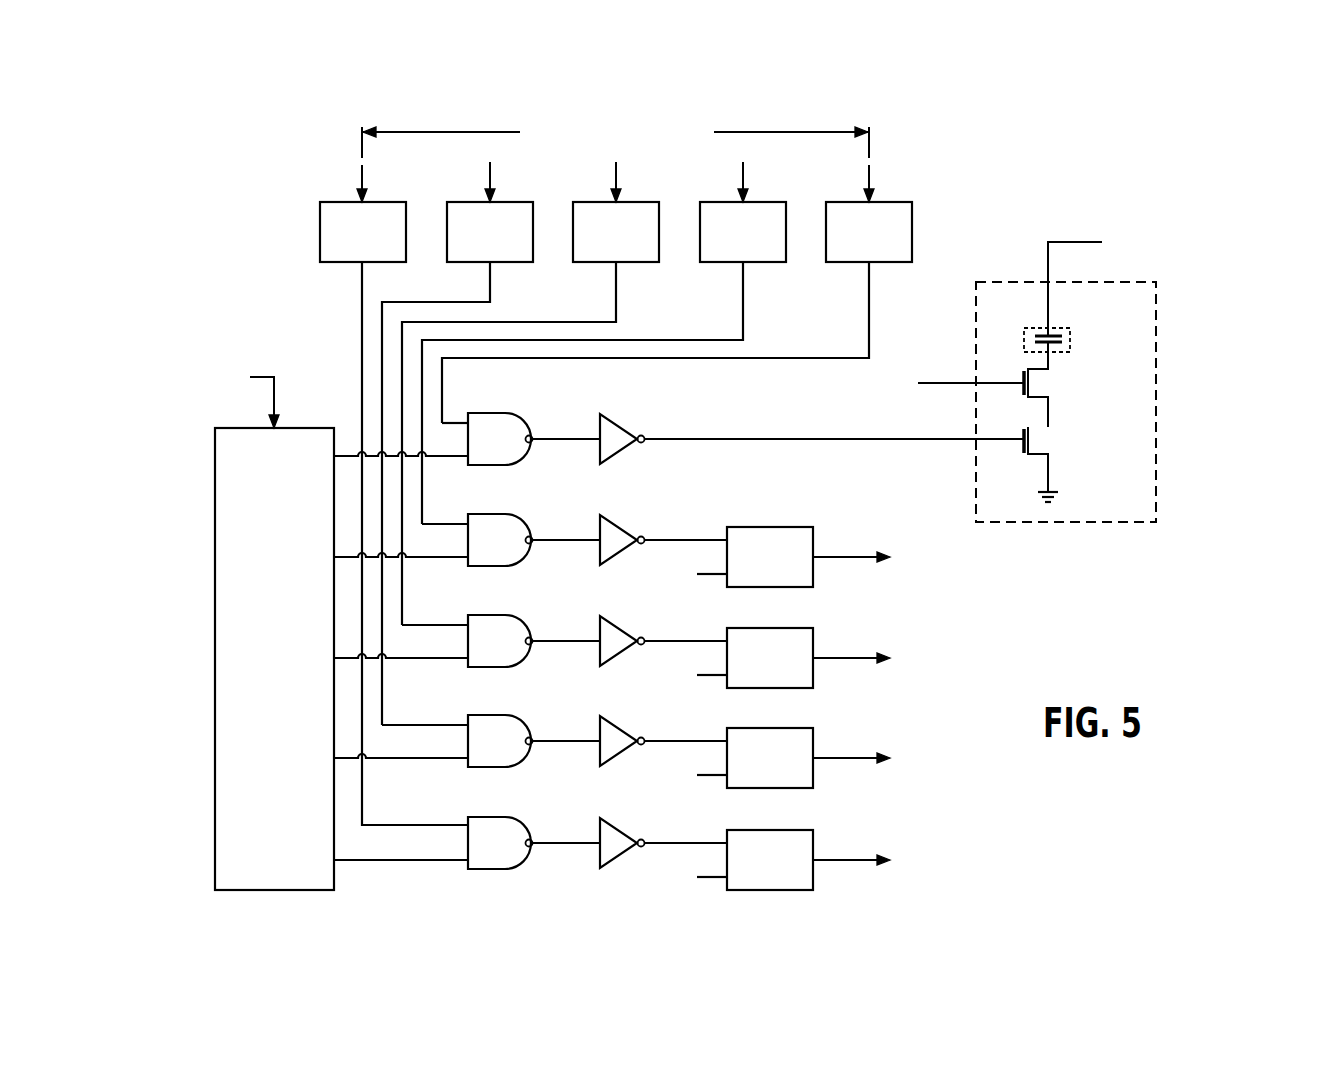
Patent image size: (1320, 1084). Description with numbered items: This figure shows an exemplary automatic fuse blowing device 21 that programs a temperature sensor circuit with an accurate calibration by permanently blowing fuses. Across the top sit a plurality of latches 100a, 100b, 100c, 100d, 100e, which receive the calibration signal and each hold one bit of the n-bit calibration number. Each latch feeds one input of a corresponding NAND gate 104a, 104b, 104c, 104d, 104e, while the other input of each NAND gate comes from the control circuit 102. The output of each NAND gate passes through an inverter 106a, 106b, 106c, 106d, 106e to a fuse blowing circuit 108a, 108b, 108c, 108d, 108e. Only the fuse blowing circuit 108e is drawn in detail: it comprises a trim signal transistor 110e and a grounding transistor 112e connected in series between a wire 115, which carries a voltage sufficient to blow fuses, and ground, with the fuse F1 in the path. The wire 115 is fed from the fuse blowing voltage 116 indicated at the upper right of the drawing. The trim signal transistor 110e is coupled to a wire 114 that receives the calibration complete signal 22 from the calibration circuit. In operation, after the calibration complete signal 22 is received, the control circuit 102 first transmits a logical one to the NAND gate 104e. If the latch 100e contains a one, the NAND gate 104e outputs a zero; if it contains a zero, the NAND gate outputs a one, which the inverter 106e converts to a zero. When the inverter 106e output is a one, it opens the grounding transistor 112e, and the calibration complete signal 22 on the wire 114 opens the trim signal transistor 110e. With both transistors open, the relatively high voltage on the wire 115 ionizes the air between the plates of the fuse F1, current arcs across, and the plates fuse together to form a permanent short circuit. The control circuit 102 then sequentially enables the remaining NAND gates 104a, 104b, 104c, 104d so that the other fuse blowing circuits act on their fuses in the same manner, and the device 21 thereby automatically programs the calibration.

The automatic fuse blowing device 21 is at (262, 201).
The calibration complete signal 22 is at (258, 377).
The latch 100a is at (378, 202).
The latch 100b is at (505, 202).
The latch 100c is at (631, 202).
The latch 100d is at (758, 202).
The latch 100e is at (884, 202).
The control circuit 102 is at (215, 690).
The NAND gate 104a is at (480, 817).
The NAND gate 104b is at (480, 715).
The NAND gate 104c is at (480, 615).
The NAND gate 104d is at (480, 514).
The NAND gate 104e is at (480, 413).
The inverter 106a is at (608, 824).
The inverter 106b is at (608, 722).
The inverter 106c is at (608, 622).
The inverter 106d is at (608, 521).
The inverter 106e is at (608, 420).
The fuse blowing circuit 108a is at (770, 830).
The fuse blowing circuit 108b is at (770, 728).
The fuse blowing circuit 108c is at (770, 628).
The fuse blowing circuit 108d is at (770, 527).
The fuse blowing circuit 108e is at (1156, 455).
The trim signal transistor 110e is at (1044, 382).
The grounding transistor 112e is at (1044, 440).
The wire 114 is at (960, 383).
The wire 115 is at (1080, 242).
The fuse blowing voltage source 116 is at (1167, 214).
The fuse F1 is at (1072, 340).